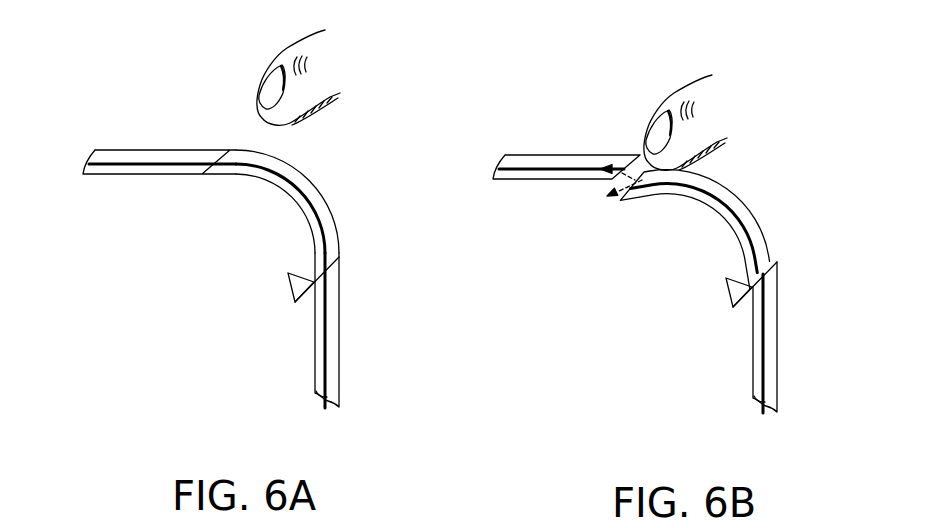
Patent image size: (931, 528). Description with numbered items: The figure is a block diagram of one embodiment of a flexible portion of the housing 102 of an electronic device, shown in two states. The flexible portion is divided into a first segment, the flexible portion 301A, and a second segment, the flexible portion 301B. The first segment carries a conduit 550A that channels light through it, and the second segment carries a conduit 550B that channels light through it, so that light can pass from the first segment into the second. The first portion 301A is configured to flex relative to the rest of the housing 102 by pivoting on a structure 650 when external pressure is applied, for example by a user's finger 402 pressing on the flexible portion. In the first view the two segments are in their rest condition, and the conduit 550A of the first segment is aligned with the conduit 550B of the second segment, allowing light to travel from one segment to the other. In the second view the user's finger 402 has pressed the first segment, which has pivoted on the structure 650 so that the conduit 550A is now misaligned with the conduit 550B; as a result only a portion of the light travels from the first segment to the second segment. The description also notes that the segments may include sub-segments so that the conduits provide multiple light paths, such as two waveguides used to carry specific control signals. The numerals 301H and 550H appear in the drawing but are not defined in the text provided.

In FIG. 6A, the housing 102 is at (350, 348).
In FIG. 6B, the housing 102 is at (788, 357).
In FIG. 6A, the flexible portion 301A is at (320, 190).
In FIG. 6B, the flexible portion 301A is at (732, 192).
In FIG. 6A, the flexible portion 301B is at (205, 147).
In FIG. 6B, the flexible portion 301B is at (602, 155).
In FIG. 6A, the hinge display portion 301H is at (314, 328).
In FIG. 6B, the hinge display portion 301H is at (752, 322).
In FIG. 6A, the user's finger 402 is at (287, 48).
In FIG. 6B, the user's finger 402 is at (683, 87).
In FIG. 6A, the conduit 550A is at (328, 242).
In FIG. 6B, the conduit 550A is at (760, 249).
In FIG. 6A, the conduit 550B is at (133, 163).
In FIG. 6B, the conduit 550B is at (537, 168).
In FIG. 6A, the hinge housing portion 550H is at (328, 312).
In FIG. 6B, the hinge housing portion 550H is at (764, 318).
In FIG. 6A, the structure 650 is at (292, 300).
In FIG. 6B, the structure 650 is at (730, 306).